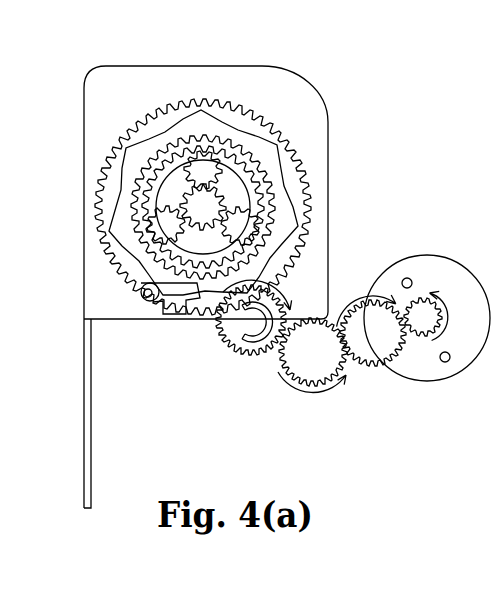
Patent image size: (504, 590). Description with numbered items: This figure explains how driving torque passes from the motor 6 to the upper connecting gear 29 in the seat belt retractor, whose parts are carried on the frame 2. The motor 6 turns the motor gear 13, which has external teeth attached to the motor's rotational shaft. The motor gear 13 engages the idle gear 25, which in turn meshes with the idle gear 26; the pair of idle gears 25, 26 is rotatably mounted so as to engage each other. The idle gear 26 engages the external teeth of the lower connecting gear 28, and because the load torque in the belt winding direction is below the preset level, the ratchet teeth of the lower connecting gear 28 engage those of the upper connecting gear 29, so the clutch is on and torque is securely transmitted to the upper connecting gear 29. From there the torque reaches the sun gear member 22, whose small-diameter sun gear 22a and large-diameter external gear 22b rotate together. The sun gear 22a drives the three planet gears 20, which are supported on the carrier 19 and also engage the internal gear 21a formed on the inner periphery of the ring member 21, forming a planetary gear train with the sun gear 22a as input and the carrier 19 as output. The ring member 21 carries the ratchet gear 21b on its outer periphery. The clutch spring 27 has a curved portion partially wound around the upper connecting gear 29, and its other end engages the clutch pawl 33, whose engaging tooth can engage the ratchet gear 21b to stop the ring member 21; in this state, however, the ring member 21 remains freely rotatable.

The frame 2 is at (236, 66).
The motor 6 is at (462, 372).
The motor gear 13 is at (421, 340).
The carrier 19 is at (178, 196).
The planet gears 20 is at (199, 163).
The ring member 21 is at (251, 161).
The internal gear 21a is at (277, 192).
The ratchet gear 21b is at (278, 180).
The sun gear member 22 is at (216, 171).
The sun gear 22a is at (167, 213).
The large-diameter external gear 22b is at (282, 137).
The idle gear 25 is at (364, 386).
The idle gear 26 is at (305, 386).
The clutch spring 27 is at (190, 312).
The lower connecting gear 28 is at (247, 360).
The upper connecting gear 29 is at (222, 330).
The clutch pawl 33 is at (153, 308).